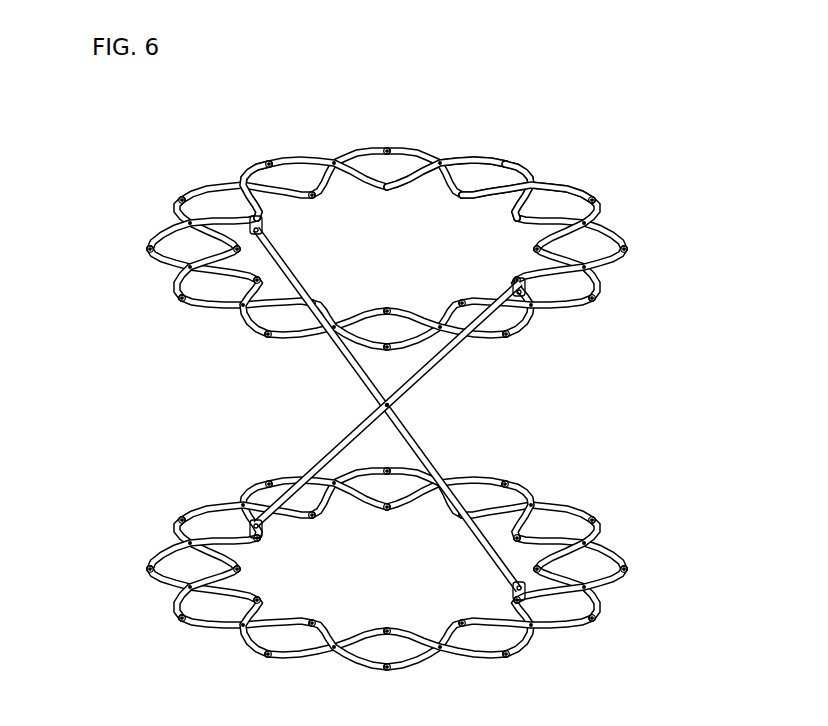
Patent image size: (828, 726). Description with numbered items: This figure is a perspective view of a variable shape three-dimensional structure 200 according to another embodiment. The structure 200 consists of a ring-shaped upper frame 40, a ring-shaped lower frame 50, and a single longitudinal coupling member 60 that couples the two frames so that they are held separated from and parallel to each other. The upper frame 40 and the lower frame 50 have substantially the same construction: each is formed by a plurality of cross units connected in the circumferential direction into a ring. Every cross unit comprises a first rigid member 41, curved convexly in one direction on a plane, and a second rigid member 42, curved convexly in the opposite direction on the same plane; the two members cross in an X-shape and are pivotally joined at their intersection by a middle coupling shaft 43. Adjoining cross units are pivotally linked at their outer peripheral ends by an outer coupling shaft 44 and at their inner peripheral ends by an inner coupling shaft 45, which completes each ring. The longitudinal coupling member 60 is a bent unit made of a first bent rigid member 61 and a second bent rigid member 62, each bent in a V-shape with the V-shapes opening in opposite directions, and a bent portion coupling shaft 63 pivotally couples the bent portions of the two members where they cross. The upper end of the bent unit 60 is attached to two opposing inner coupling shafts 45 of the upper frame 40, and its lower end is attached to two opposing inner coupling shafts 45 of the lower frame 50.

The variable shape three-dimensional structure 200 is at (513, 116).
The upper frame 40 is at (368, 234).
The first rigid member 41 is at (528, 172).
The second rigid member 42 is at (567, 188).
The middle coupling shaft 43 is at (440, 160).
The outer coupling shaft 44 is at (267, 160).
The inner coupling shaft 45 is at (251, 224).
The lower frame 50 is at (153, 611).
The longitudinal coupling member 60 is at (388, 409).
The first bent rigid member 61 is at (432, 466).
The second bent rigid member 62 is at (331, 458).
The bent portion coupling shaft 63 is at (396, 405).